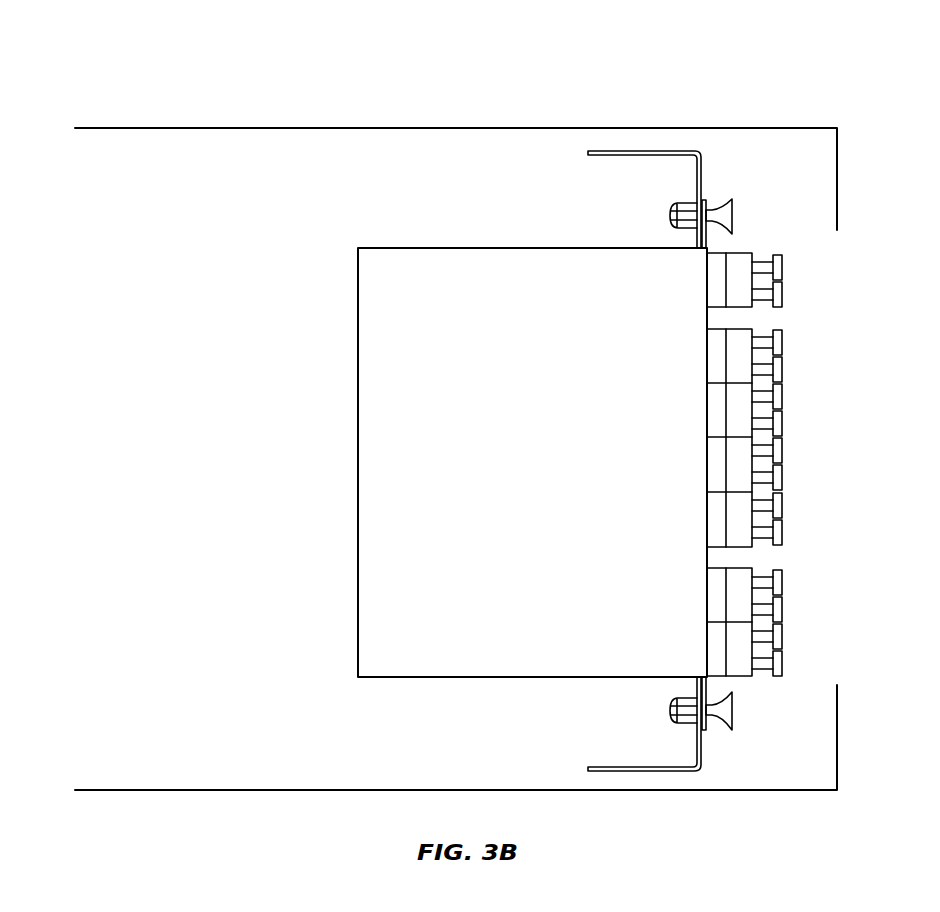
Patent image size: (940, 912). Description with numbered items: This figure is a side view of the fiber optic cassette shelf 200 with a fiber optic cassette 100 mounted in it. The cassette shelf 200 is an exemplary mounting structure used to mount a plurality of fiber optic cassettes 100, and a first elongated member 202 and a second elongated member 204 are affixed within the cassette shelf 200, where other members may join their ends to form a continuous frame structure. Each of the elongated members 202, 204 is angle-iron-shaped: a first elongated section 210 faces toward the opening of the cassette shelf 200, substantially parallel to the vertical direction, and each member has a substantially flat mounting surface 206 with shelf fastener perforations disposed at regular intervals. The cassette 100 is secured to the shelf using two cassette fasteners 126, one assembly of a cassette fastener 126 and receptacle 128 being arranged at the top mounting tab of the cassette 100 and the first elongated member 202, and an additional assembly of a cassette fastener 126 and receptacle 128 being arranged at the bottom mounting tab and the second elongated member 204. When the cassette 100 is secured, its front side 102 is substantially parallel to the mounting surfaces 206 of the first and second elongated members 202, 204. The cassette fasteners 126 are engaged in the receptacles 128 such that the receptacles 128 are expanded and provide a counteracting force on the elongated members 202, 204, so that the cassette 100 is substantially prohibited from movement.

The fiber optic cassette shelf 200 is at (737, 62).
The second elongated member 204 is at (700, 163).
The first elongated member 202 is at (700, 768).
The mounting surface 206 is at (706, 169).
The first elongated section 210 is at (702, 183).
The receptacle 128 is at (670, 216).
The cassette fastener 126 is at (715, 215).
The fiber optic cassette 100 is at (817, 449).
The front side 102 is at (708, 318).